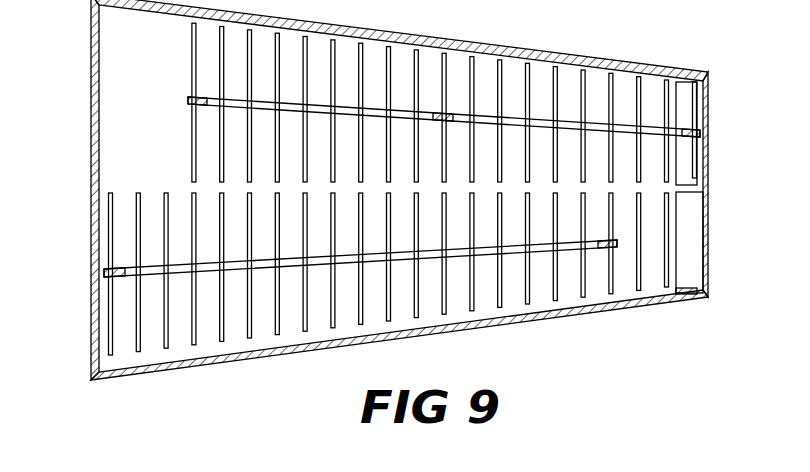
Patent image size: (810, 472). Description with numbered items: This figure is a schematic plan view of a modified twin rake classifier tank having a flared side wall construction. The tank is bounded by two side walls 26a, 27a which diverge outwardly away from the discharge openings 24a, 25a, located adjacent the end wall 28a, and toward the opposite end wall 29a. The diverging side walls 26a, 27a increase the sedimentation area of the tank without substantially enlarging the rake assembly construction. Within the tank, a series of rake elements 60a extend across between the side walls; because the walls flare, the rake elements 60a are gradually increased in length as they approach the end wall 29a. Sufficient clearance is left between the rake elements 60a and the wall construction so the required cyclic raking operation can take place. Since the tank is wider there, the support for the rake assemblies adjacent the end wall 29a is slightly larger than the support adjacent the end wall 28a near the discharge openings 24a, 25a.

The discharge opening 24a is at (683, 84).
The discharge opening 25a is at (693, 286).
The side wall 26a is at (380, 34).
The side wall 27a is at (302, 348).
The end wall 28a is at (708, 163).
The end wall 29a is at (93, 120).
The rake element 60a is at (549, 290).